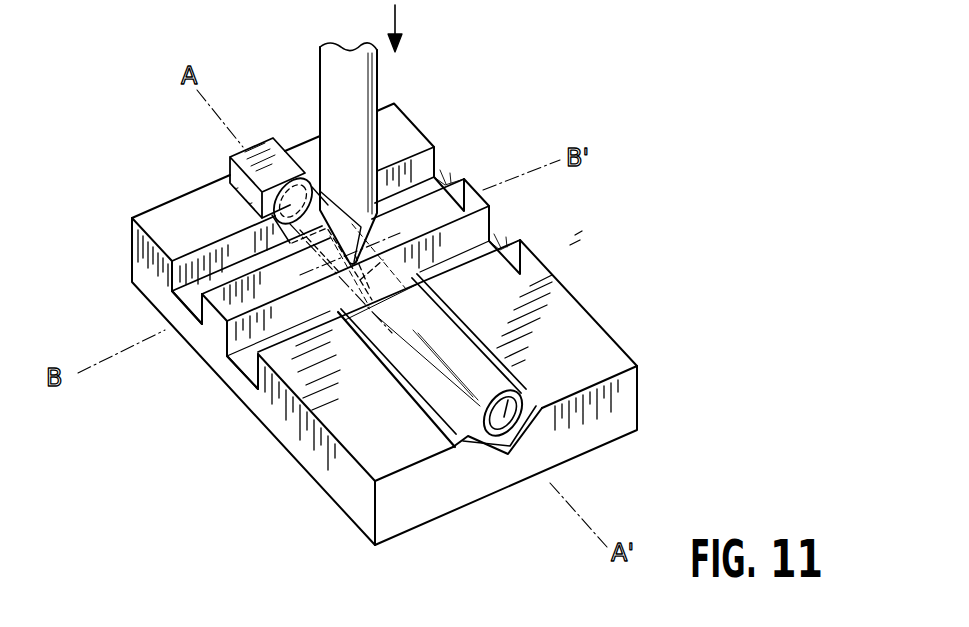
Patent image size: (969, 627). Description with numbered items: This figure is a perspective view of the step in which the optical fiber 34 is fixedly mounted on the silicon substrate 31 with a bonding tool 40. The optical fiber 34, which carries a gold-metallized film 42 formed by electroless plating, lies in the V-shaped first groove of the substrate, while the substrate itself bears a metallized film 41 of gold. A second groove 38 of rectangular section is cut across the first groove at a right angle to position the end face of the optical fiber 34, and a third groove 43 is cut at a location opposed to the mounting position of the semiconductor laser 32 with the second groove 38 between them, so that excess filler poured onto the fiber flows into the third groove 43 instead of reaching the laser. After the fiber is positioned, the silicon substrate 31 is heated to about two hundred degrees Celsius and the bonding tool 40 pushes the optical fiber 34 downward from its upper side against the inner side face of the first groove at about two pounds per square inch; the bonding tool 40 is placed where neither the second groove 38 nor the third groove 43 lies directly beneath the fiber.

The silicon substrate 31 is at (627, 398).
The semiconductor laser 32 is at (247, 156).
The optical fiber 34 is at (516, 396).
The second groove 38 is at (187, 298).
The bonding tool 40 is at (379, 79).
The metallized film 41 is at (506, 452).
The gold-metallized film 42 is at (524, 424).
The third groove 43 is at (233, 360).